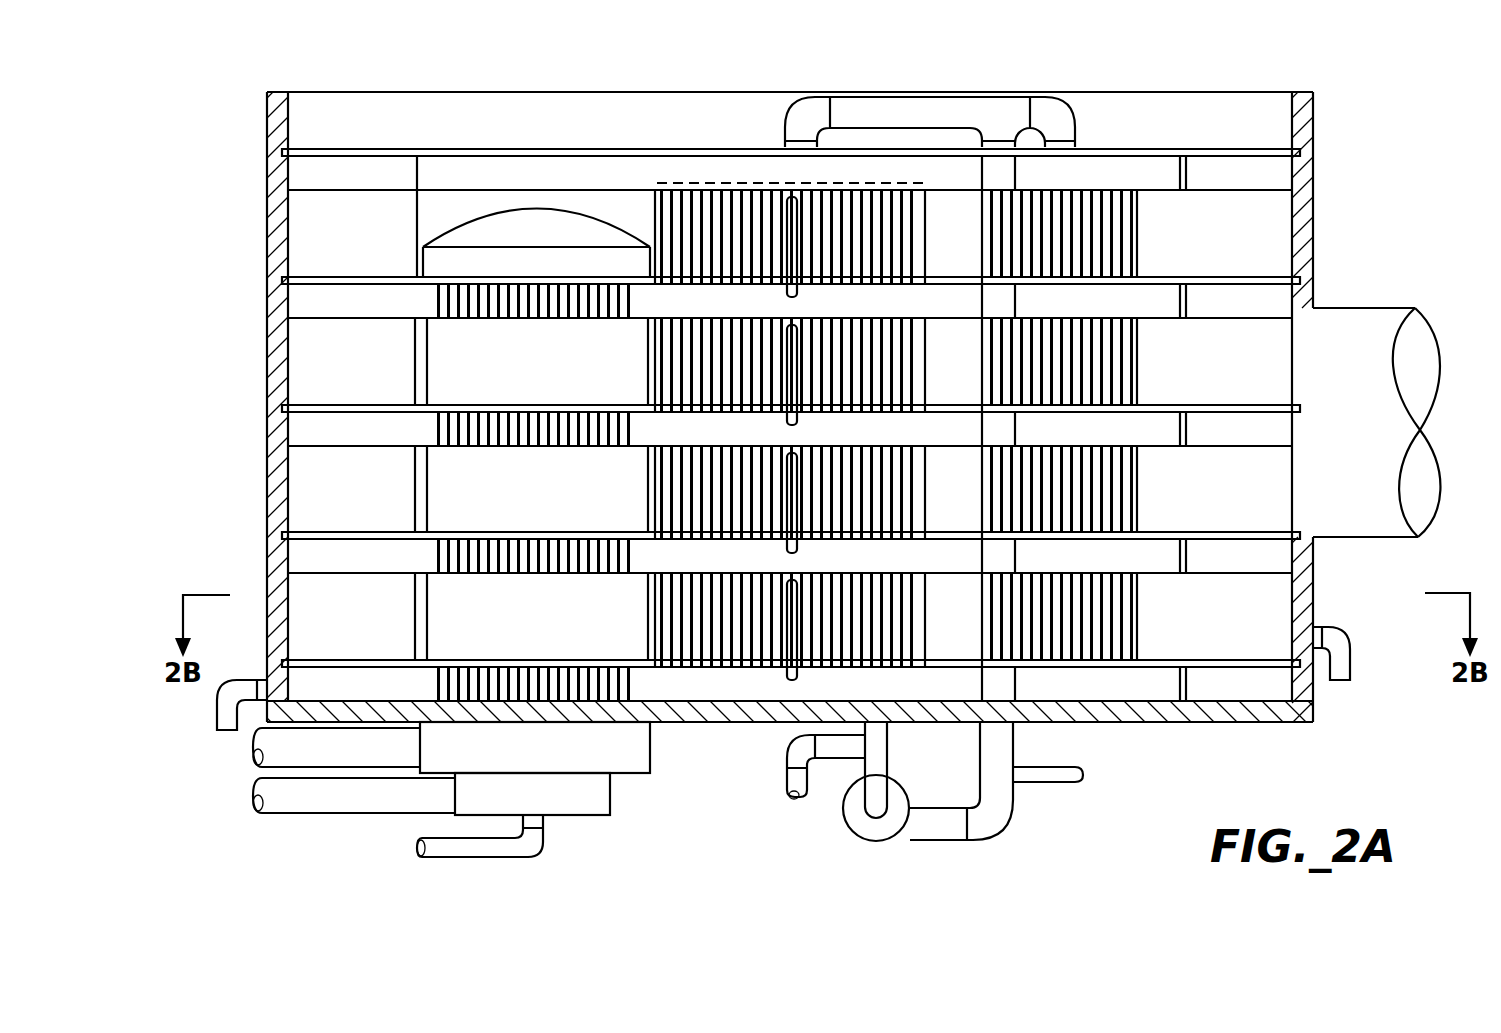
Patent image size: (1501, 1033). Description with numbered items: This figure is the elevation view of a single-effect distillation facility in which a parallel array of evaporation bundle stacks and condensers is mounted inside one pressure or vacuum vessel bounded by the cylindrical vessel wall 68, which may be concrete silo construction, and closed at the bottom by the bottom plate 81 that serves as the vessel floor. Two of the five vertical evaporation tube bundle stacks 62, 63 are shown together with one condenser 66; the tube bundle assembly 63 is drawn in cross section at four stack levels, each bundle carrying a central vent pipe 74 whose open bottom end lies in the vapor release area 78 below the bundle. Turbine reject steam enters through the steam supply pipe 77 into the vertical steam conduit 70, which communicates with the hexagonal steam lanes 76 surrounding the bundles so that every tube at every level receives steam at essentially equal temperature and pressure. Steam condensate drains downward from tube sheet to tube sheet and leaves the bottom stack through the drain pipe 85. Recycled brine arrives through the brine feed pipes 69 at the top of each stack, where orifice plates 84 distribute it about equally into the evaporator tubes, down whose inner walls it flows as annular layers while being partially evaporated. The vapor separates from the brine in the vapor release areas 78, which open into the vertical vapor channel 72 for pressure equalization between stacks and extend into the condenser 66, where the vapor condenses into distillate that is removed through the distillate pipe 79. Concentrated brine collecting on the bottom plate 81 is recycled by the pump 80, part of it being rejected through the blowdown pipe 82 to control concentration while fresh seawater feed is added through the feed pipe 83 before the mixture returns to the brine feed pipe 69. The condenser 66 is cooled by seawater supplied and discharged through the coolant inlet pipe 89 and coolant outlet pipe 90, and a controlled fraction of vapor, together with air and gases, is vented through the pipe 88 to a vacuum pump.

The vertical evaporation tube bundle stack 62 is at (1090, 235).
The vertical four-stack tube bundle assembly 63 is at (753, 212).
The condenser 66 is at (523, 504).
The cylindrical vessel wall 68 is at (1315, 190).
The brine feed pipe 69 is at (908, 103).
The steam conduit 70 is at (1231, 252).
The vapor channel 72 is at (341, 315).
The vent pipe 74 is at (797, 290).
The steam lane 76 is at (941, 252).
The turbine reject steam supply pipe 77 is at (1341, 437).
The vapor release area 78 is at (701, 315).
The distillate pipe 79 is at (232, 732).
The pump 80 is at (873, 842).
The bottom plate 81 is at (1100, 692).
The blowdown pipe 82 is at (1083, 777).
The feed pipe 83 is at (800, 797).
The orifice plate 84 is at (678, 172).
The drain pipe 85 is at (1350, 682).
The vent pipe to vacuum pump 88 is at (418, 848).
The coolant inlet pipe 89 is at (250, 800).
The coolant outlet pipe 90 is at (250, 758).